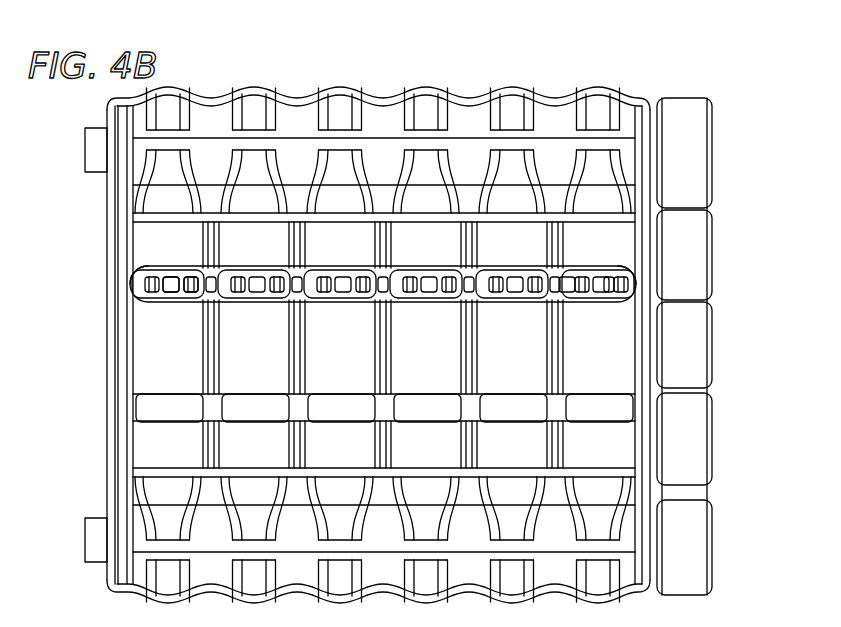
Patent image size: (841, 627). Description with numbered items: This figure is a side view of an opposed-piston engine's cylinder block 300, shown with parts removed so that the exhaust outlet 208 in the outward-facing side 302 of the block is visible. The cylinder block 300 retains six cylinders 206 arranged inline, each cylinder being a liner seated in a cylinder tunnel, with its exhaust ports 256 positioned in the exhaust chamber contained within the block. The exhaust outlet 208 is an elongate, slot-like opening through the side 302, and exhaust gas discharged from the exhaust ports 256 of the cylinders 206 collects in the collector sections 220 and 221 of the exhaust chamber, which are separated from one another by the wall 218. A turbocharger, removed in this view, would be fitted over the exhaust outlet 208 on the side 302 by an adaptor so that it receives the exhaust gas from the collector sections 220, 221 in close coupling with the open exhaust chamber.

The cylinder block 300 is at (553, 90).
The side of the cylinder block 302 is at (160, 341).
The exhaust outlet 208 is at (573, 259).
The wall 218 is at (386, 276).
The collector section 220 is at (141, 270).
The collector section 221 is at (632, 272).
The cylinder 206 is at (163, 295).
The exhaust port 256 is at (185, 279).